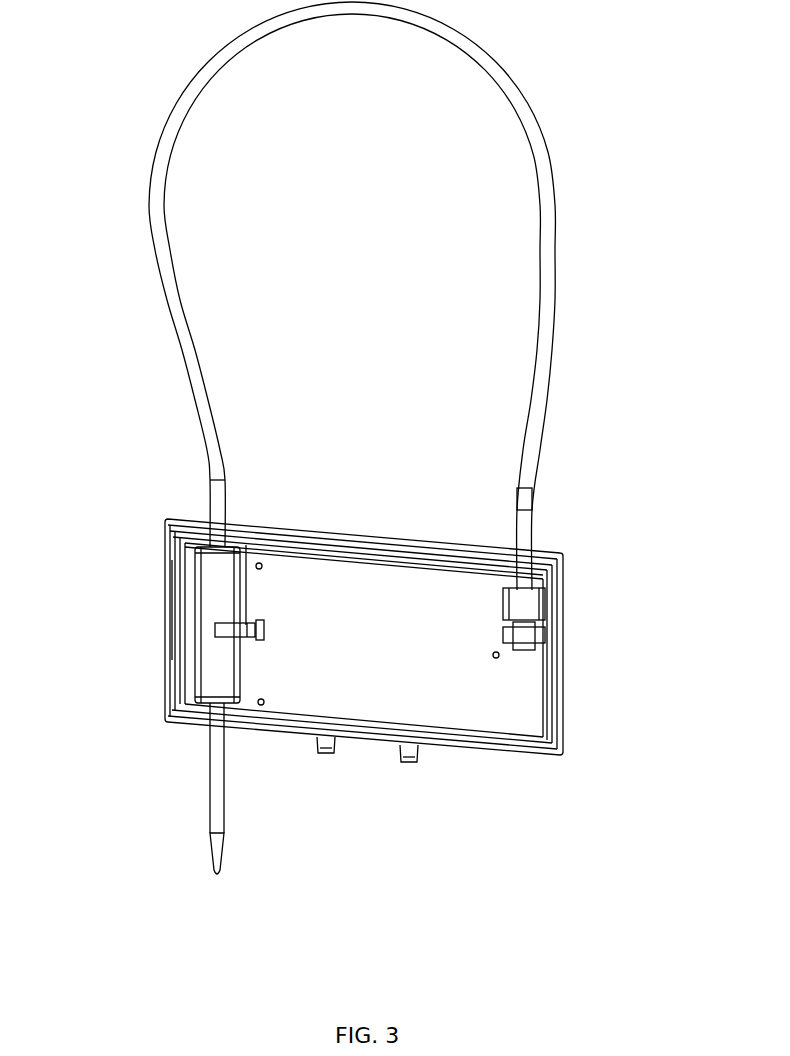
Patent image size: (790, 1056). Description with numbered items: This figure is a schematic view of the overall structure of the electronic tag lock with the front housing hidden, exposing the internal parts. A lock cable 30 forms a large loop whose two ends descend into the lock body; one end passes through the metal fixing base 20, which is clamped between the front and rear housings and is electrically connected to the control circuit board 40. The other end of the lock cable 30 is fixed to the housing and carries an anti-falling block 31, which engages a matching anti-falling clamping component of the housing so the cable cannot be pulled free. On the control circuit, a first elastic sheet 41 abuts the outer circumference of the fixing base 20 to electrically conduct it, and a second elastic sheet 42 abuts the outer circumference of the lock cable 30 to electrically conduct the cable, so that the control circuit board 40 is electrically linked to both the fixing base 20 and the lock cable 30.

The fixing base 20 is at (190, 577).
The lock cable 30 is at (520, 500).
The anti-falling block 31 is at (525, 600).
The control circuit board 40 is at (528, 682).
The first elastic sheet 41 is at (215, 628).
The second elastic sheet 42 is at (540, 630).